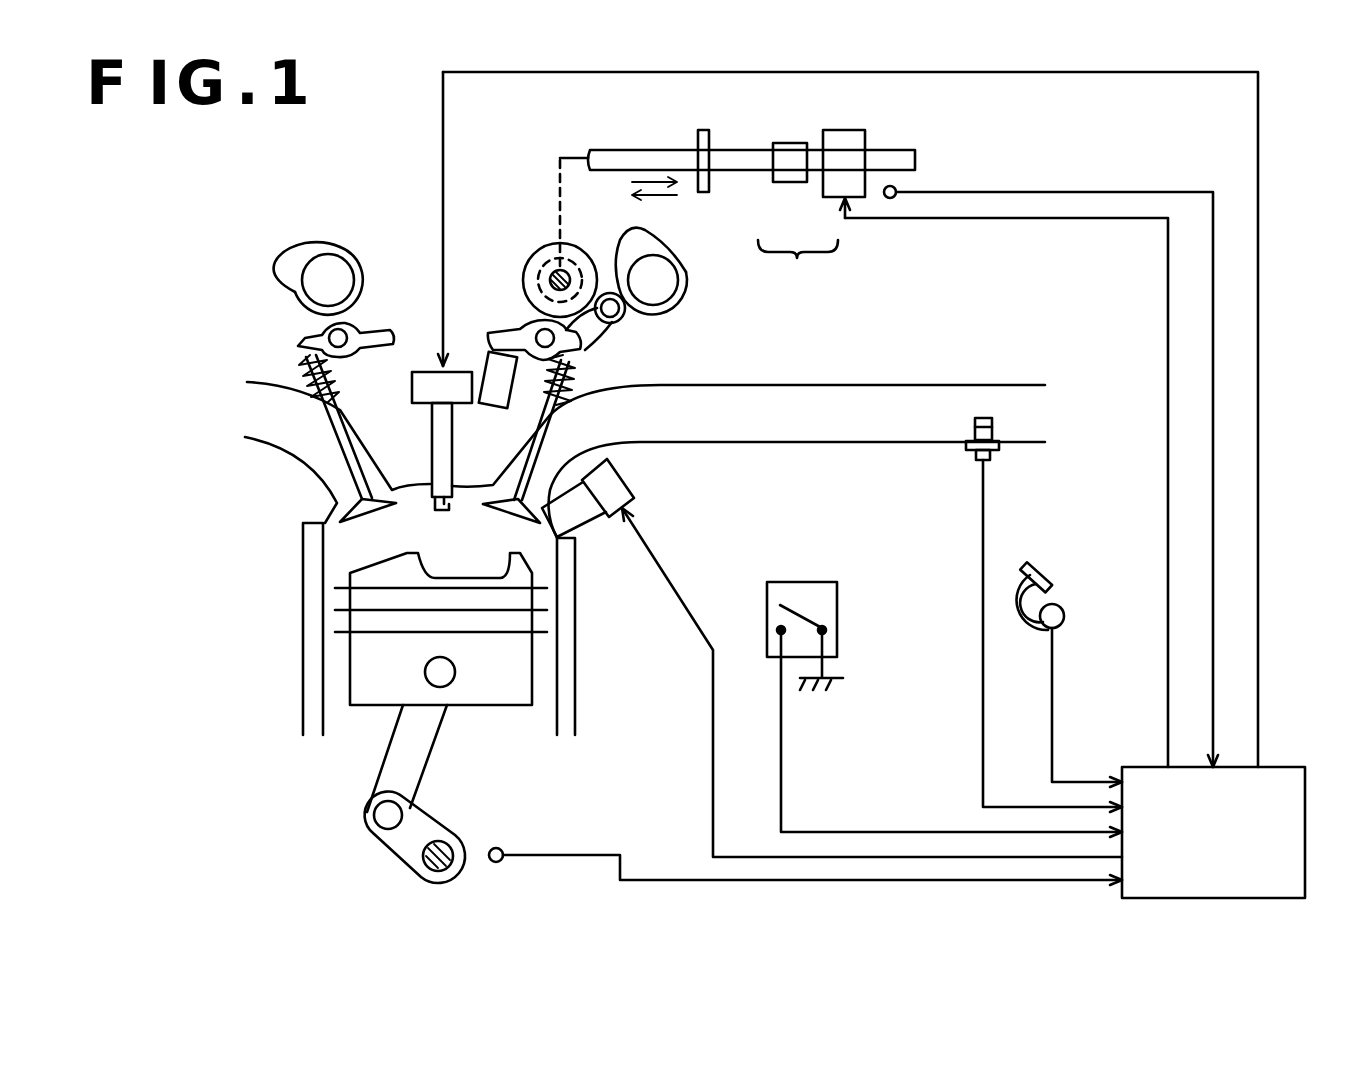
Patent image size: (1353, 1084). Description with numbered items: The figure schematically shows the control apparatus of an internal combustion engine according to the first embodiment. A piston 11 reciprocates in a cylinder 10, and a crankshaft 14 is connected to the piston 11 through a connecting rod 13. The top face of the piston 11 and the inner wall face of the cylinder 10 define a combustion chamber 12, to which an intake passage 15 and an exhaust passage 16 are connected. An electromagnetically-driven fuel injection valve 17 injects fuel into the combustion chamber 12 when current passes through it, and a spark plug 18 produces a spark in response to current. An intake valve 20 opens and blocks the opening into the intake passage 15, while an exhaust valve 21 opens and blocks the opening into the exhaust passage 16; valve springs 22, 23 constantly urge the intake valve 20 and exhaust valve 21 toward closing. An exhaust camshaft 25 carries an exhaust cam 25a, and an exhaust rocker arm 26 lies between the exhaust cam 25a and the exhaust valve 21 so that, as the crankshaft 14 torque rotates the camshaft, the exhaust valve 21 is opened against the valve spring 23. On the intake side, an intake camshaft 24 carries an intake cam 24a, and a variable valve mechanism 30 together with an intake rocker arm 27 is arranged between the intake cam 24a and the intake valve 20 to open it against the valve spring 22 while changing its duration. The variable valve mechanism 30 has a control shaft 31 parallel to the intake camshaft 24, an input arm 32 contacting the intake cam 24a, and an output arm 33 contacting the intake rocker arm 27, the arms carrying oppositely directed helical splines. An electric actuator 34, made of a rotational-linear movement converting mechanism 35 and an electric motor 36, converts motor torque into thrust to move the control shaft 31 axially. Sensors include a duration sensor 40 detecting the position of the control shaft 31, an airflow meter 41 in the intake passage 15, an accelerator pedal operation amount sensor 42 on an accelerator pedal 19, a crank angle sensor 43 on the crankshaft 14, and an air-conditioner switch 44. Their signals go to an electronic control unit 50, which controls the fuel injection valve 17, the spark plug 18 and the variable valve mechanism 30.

The cylinder 10 is at (323, 708).
The piston 11 is at (503, 695).
The combustion chamber 12 is at (337, 533).
The connecting rod 13 is at (420, 773).
The crankshaft 14 is at (420, 862).
The intake passage 15 is at (665, 443).
The exhaust passage 16 is at (278, 445).
The fuel injection valve 17 is at (616, 505).
The spark plug 18 is at (431, 478).
The accelerator pedal 19 is at (1033, 565).
The intake valve 20 is at (517, 511).
The exhaust valve 21 is at (365, 512).
The valve spring 22 is at (552, 388).
The valve spring 23 is at (340, 395).
The intake camshaft 24 is at (688, 281).
The intake cam 24a is at (660, 233).
The exhaust camshaft 25 is at (310, 311).
The exhaust cam 25a is at (287, 268).
The exhaust rocker arm 26 is at (362, 326).
The intake rocker arm 27 is at (493, 328).
The variable valve mechanism 30 is at (522, 230).
The control shaft 31 is at (560, 272).
The input arm 32 is at (625, 322).
The output arm 33 is at (585, 344).
The electric actuator 34 is at (933, 448).
The rotational-linear movement converting mechanism 35 is at (783, 195).
The electric motor 36 is at (986, 448).
The duration sensor 40 is at (905, 186).
The airflow meter 41 is at (975, 448).
The accelerator pedal operation amount sensor 42 is at (1065, 616).
The crank angle sensor 43 is at (500, 849).
The air-conditioner switch 44 is at (798, 582).
The electronic control unit 50 is at (1208, 900).